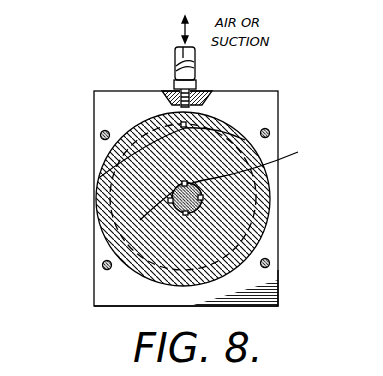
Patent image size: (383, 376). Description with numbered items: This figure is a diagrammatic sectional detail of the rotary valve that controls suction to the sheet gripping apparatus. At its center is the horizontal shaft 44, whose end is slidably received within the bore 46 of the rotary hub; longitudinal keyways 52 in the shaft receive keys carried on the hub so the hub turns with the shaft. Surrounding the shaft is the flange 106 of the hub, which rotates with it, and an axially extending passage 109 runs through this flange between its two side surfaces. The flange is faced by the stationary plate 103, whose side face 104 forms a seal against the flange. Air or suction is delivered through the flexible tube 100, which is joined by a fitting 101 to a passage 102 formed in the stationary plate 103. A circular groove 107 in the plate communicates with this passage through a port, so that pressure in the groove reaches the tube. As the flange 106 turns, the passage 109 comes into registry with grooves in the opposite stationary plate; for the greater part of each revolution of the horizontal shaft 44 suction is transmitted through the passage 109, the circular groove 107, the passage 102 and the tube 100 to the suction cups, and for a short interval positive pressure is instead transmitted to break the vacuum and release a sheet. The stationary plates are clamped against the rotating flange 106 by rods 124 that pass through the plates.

The horizontal shaft 44 is at (176, 211).
The bore 46 is at (210, 174).
The longitudinal keyways 52 is at (168, 201).
The flexible tube 100 is at (176, 55).
The fitting 101 is at (190, 73).
The passage 102 is at (192, 103).
The stationary plate 103 is at (279, 270).
The side face 104 is at (103, 118).
The flange 106 is at (266, 220).
The circular groove 107 is at (264, 184).
The axially extending passage 109 is at (181, 124).
The rods 124 is at (270, 132).